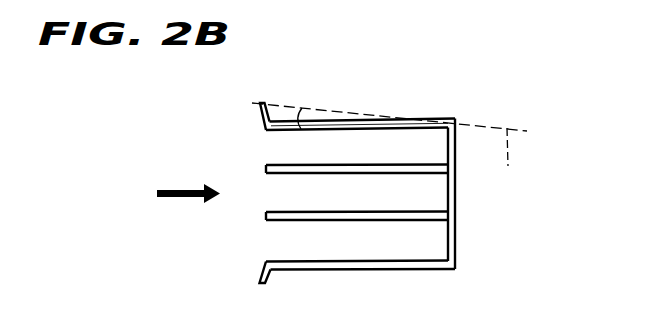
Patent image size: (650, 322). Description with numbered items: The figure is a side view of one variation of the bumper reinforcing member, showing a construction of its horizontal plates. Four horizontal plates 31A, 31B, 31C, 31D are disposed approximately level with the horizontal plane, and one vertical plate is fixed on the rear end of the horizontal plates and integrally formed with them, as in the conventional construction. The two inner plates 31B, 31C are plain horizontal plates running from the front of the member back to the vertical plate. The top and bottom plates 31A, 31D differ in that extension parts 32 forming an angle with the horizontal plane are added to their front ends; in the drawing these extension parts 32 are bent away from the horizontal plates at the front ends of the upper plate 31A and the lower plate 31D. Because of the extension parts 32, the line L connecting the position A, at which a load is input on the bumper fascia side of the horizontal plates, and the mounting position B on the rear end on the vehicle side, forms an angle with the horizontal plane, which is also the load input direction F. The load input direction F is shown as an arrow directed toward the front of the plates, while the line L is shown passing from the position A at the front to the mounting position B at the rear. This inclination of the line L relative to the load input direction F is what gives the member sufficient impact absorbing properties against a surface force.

The horizontal plate 31A is at (331, 117).
The horizontal plate 31B is at (375, 146).
The horizontal plate 31C is at (372, 193).
The horizontal plate 31D is at (368, 261).
The extension part 32 is at (261, 118).
The position A is at (271, 99).
The mounting position B is at (447, 113).
The load input direction F is at (188, 179).
The line L is at (389, 149).